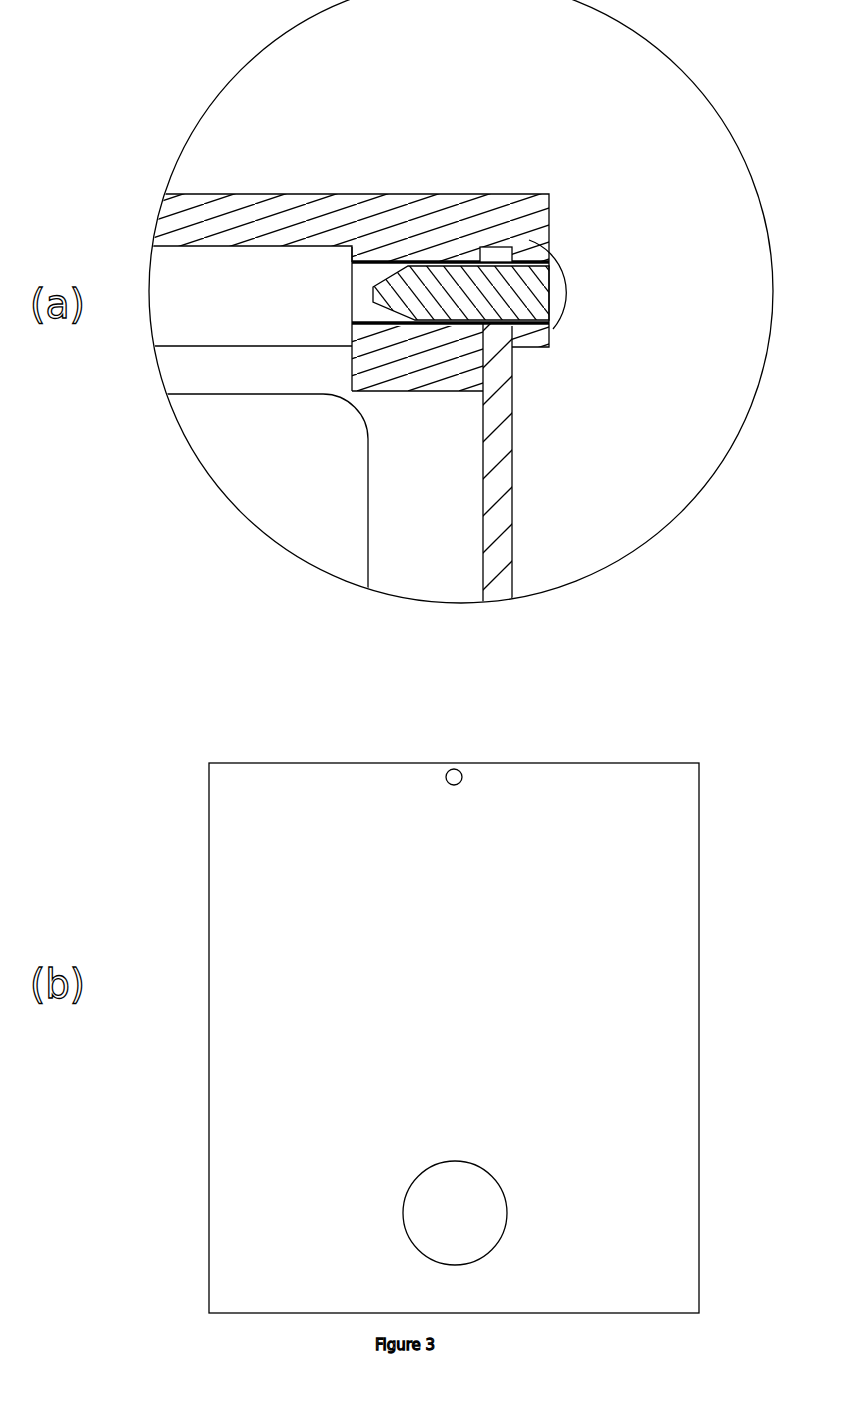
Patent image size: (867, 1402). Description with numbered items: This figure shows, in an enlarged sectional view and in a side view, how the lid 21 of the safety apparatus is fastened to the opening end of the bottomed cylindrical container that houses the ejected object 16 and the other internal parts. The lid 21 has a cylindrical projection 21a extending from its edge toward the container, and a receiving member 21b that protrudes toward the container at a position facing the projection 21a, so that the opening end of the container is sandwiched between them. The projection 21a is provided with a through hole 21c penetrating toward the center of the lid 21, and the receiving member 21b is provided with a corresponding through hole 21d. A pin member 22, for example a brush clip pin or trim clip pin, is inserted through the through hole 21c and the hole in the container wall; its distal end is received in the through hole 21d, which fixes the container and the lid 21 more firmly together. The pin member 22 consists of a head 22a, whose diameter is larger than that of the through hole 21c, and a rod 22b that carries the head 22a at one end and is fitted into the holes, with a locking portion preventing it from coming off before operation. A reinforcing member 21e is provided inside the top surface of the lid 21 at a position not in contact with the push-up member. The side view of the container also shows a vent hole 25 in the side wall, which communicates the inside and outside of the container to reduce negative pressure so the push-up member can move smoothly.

The ejected object 16 is at (282, 485).
The lid 21 is at (555, 184).
The projection 21a is at (533, 338).
The receiving member 21b is at (427, 377).
The through hole 21c is at (572, 285).
The through hole 21d is at (360, 278).
The reinforcing member 21e is at (257, 278).
The pin member 22 is at (440, 283).
The head 22a is at (555, 294).
The rod 22b is at (460, 287).
The vent holes 25 is at (507, 1210).